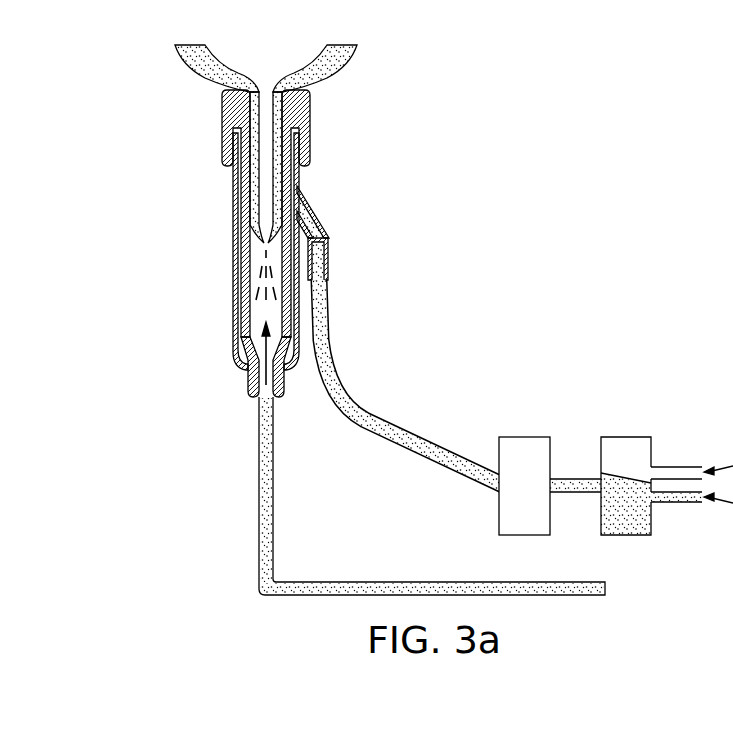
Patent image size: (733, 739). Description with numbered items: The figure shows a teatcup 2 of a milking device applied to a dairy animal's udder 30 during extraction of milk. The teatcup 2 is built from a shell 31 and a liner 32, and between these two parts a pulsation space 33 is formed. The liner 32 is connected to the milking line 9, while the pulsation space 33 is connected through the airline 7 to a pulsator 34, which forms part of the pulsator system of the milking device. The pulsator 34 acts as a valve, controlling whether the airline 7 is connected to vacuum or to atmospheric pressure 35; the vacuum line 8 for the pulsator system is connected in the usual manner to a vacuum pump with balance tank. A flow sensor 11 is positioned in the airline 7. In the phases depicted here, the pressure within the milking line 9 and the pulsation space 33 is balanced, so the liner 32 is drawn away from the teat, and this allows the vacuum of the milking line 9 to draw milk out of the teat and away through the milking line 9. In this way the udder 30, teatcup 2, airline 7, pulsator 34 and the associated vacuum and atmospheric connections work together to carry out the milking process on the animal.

The teatcup 2 is at (205, 210).
The airline 7 is at (337, 378).
The vacuum line 8 is at (732, 528).
The milking line 9 is at (605, 590).
The flow sensor 11 is at (525, 437).
The udder 30 is at (327, 75).
The shell 31 is at (237, 193).
The liner 32 is at (244, 292).
The pulsation space 33 is at (242, 243).
The pulsator 34 is at (625, 437).
The atmospheric pressure 35 is at (732, 450).